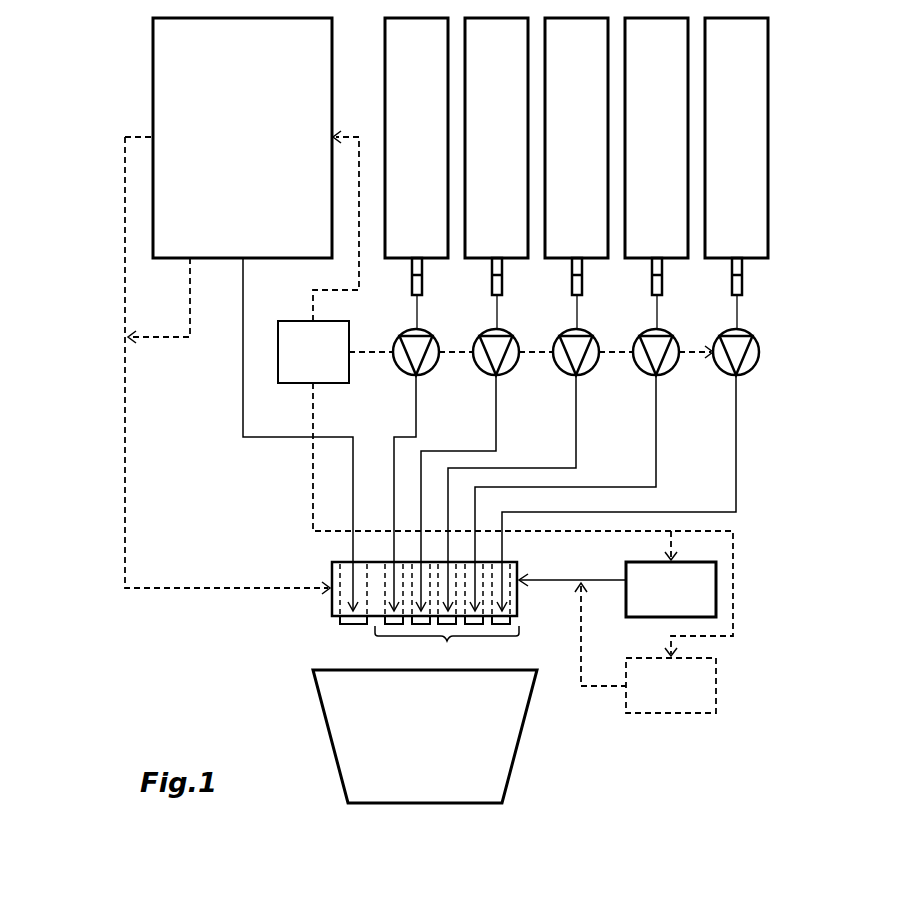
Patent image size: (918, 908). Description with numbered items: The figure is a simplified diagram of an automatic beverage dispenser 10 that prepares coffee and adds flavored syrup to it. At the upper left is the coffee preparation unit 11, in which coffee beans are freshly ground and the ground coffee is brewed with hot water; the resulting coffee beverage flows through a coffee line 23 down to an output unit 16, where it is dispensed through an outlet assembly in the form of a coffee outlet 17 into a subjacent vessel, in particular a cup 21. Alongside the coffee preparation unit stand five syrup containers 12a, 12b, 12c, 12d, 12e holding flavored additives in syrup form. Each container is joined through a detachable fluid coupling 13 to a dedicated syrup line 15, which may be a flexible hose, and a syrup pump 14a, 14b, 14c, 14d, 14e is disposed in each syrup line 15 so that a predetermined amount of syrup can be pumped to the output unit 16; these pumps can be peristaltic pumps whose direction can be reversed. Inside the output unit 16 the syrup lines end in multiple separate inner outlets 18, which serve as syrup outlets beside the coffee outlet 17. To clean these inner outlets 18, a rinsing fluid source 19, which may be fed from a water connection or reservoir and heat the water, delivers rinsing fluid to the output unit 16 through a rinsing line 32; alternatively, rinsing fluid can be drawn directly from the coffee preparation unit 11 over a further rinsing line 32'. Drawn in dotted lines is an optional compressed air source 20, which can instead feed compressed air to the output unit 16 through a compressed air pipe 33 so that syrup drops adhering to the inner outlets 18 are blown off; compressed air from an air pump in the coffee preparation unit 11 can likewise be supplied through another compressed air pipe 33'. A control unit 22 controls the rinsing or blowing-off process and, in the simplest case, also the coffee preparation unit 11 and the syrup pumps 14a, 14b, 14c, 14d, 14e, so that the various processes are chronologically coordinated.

The automatic beverage dispenser 10 is at (224, 514).
The coffee preparation unit 11 is at (258, 165).
The syrup container 12a is at (435, 164).
The syrup container 12b is at (515, 164).
The syrup container 12c is at (595, 164).
The syrup container 12d is at (675, 164).
The syrup container 12e is at (755, 164).
The detachable fluid coupling 13 is at (756, 278).
The syrup pump 14a is at (432, 372).
The syrup pump 14b is at (512, 372).
The syrup pump 14c is at (592, 372).
The syrup pump 14d is at (672, 372).
The syrup pump 14e is at (752, 372).
The syrup line 15 is at (746, 499).
The output unit 16 is at (331, 607).
The coffee outlet 17 is at (338, 620).
The inner outlet 18 is at (491, 691).
The rinsing fluid source 19 is at (697, 588).
The compressed air source 20 is at (693, 674).
The cup 21 is at (436, 754).
The control unit 22 is at (330, 364).
The coffee line 23 is at (243, 375).
The rinsing line 32 is at (572, 561).
The rinsing line 32' is at (194, 365).
The compressed air pipe 33 is at (583, 634).
The compressed air pipe 33' is at (127, 300).